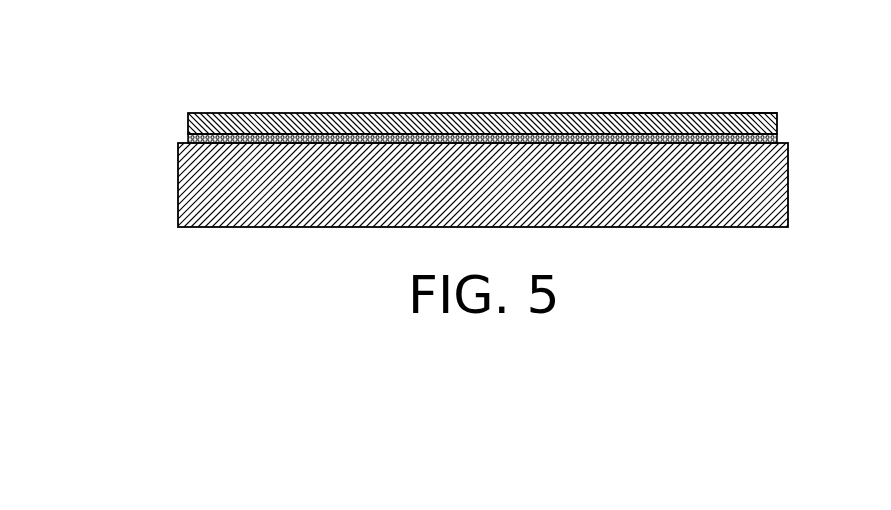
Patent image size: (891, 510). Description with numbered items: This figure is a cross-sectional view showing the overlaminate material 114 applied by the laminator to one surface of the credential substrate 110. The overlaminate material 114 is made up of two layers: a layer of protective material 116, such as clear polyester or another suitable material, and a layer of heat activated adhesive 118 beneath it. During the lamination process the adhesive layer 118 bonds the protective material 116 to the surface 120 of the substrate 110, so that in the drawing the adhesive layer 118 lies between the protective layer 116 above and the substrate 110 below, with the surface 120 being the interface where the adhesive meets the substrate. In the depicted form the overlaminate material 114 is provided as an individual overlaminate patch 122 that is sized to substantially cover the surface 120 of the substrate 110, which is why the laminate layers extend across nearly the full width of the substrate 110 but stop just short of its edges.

The credential substrate 110 is at (778, 183).
The overlaminate material 114 is at (752, 112).
The layer of protective material 116 is at (203, 123).
The layer of heat activated adhesive 118 is at (190, 140).
The surface of the substrate 120 is at (264, 128).
The overlaminate patch 122 is at (630, 117).